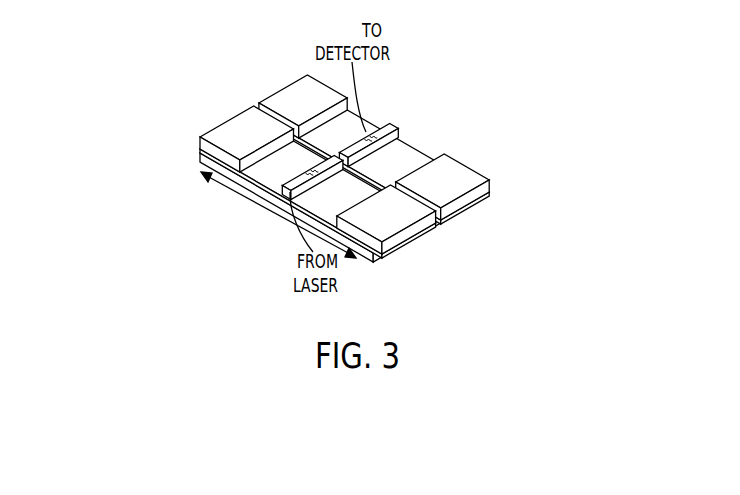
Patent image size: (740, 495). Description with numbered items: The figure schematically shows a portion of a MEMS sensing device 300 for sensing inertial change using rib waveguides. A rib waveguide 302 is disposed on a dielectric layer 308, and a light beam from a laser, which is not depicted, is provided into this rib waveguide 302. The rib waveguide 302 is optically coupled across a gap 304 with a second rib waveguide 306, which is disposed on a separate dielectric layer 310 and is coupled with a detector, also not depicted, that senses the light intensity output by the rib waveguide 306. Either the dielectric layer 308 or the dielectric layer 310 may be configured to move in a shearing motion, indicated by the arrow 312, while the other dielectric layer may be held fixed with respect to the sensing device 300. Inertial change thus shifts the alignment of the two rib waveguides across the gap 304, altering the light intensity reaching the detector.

The MEMS sensing device 300 is at (168, 80).
The rib waveguide 302 is at (288, 181).
The gap 304 is at (440, 229).
The rib waveguide 306 is at (378, 133).
The dielectric layer 308 is at (200, 138).
The dielectric layer 310 is at (478, 174).
The arrow 312 is at (305, 218).